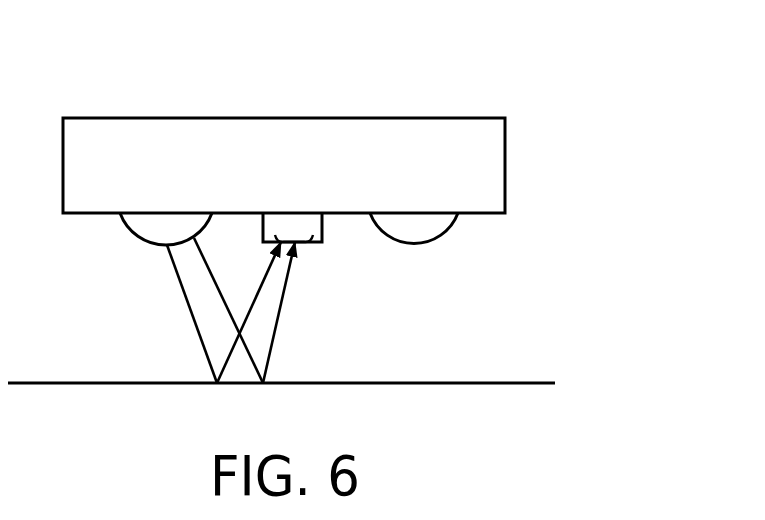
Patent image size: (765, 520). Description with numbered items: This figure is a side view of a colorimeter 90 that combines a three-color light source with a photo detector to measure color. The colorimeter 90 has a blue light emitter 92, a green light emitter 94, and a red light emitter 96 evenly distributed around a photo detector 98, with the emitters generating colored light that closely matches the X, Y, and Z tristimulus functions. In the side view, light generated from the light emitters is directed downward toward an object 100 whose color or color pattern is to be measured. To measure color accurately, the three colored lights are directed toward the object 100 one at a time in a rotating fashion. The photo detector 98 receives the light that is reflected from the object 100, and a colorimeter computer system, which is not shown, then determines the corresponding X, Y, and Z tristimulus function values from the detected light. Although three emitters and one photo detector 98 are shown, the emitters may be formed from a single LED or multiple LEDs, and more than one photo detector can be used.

The colorimeter 90 is at (586, 60).
The blue light emitter 92 is at (326, 223).
The green light emitter 94 is at (456, 227).
The red light emitter 96 is at (131, 231).
The photo detector 98 is at (313, 237).
The object 100 is at (502, 382).